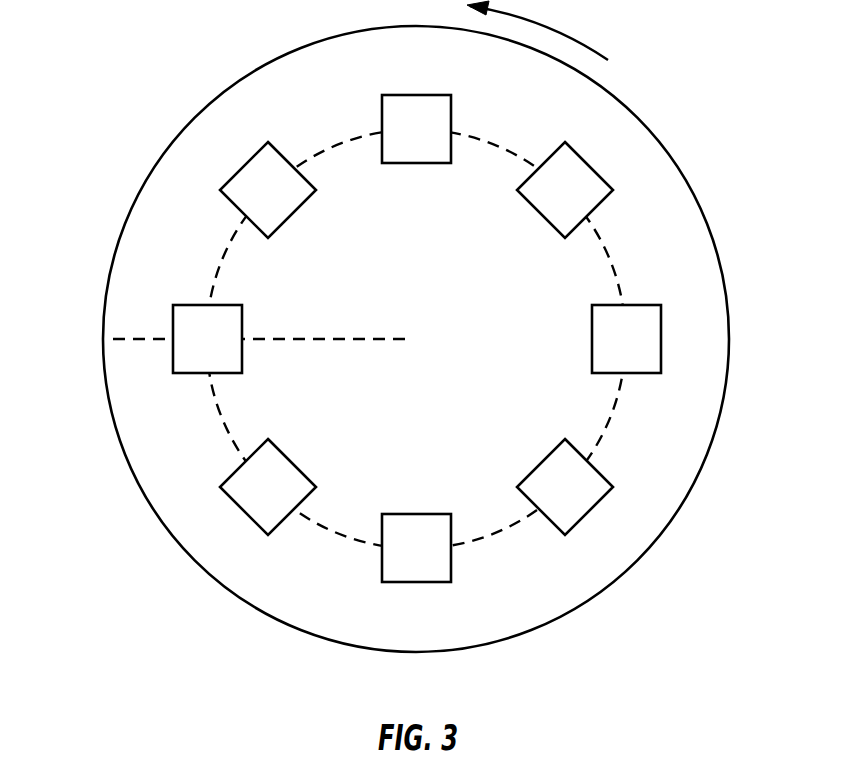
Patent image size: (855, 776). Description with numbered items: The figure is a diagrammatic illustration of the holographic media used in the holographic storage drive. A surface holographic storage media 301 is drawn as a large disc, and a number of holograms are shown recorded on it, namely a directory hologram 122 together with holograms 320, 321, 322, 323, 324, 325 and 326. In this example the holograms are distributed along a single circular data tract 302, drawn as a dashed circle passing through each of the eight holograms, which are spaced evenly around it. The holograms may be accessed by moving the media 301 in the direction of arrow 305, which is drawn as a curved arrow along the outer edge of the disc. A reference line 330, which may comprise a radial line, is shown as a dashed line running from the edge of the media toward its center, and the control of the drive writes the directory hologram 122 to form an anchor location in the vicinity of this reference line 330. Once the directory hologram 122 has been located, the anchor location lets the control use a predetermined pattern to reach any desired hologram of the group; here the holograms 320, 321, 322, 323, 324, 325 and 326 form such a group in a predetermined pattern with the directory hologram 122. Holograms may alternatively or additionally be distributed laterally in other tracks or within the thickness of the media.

The holographic storage media 301 is at (121, 232).
The data tract 302 is at (612, 417).
The arrow 305 is at (584, 48).
The reference line 330 is at (140, 338).
The directory hologram 122 is at (173, 355).
The hologram 320 is at (295, 215).
The hologram 321 is at (417, 163).
The hologram 322 is at (538, 215).
The hologram 323 is at (592, 340).
The hologram 324 is at (537, 463).
The hologram 325 is at (417, 514).
The hologram 326 is at (295, 463).